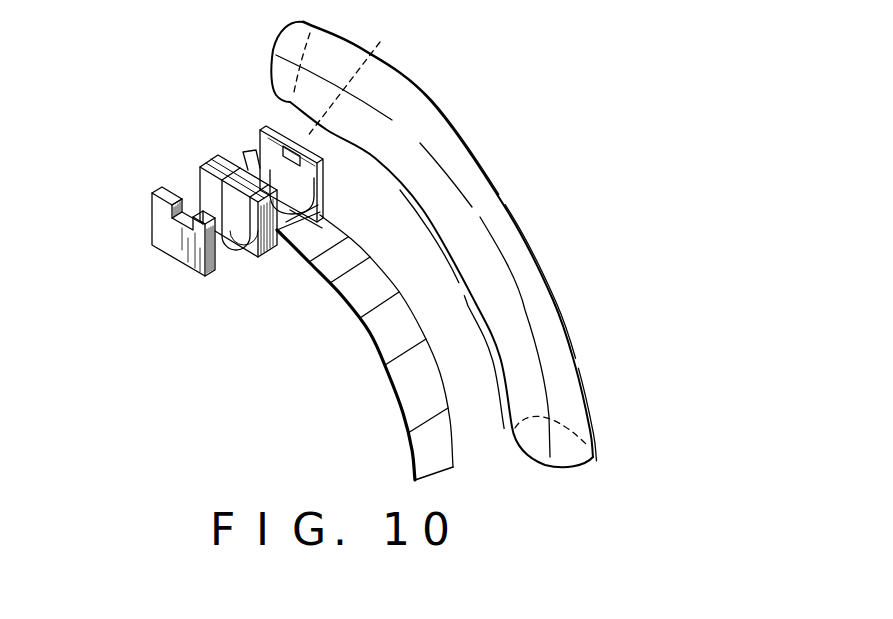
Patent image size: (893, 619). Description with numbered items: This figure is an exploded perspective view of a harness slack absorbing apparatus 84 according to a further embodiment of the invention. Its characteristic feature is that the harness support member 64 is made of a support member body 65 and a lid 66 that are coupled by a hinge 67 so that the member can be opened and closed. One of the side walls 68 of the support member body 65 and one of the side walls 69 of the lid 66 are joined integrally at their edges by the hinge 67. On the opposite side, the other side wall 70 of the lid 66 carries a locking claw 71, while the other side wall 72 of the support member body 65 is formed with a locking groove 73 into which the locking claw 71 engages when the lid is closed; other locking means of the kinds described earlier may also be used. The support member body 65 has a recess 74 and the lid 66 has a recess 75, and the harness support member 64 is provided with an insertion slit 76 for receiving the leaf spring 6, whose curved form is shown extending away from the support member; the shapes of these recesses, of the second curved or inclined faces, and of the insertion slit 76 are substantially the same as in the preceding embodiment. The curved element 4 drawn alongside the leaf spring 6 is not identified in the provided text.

The frame tube 4 is at (533, 267).
The leaf spring 6 is at (370, 343).
The harness support member 64 is at (177, 53).
The support member body 65 is at (238, 143).
The lid 66 is at (170, 170).
The hinge 67 is at (243, 160).
The side wall 68 is at (280, 233).
The side wall 69 is at (256, 226).
The other side wall 70 is at (175, 242).
The locking claw 71 is at (156, 196).
The other side wall 72 is at (322, 177).
The locking groove 73 is at (374, 50).
The recess 74 is at (297, 203).
The recess 75 is at (262, 248).
The insertion slit 76 is at (290, 222).
The harness slack absorbing apparatus 84 is at (298, 347).